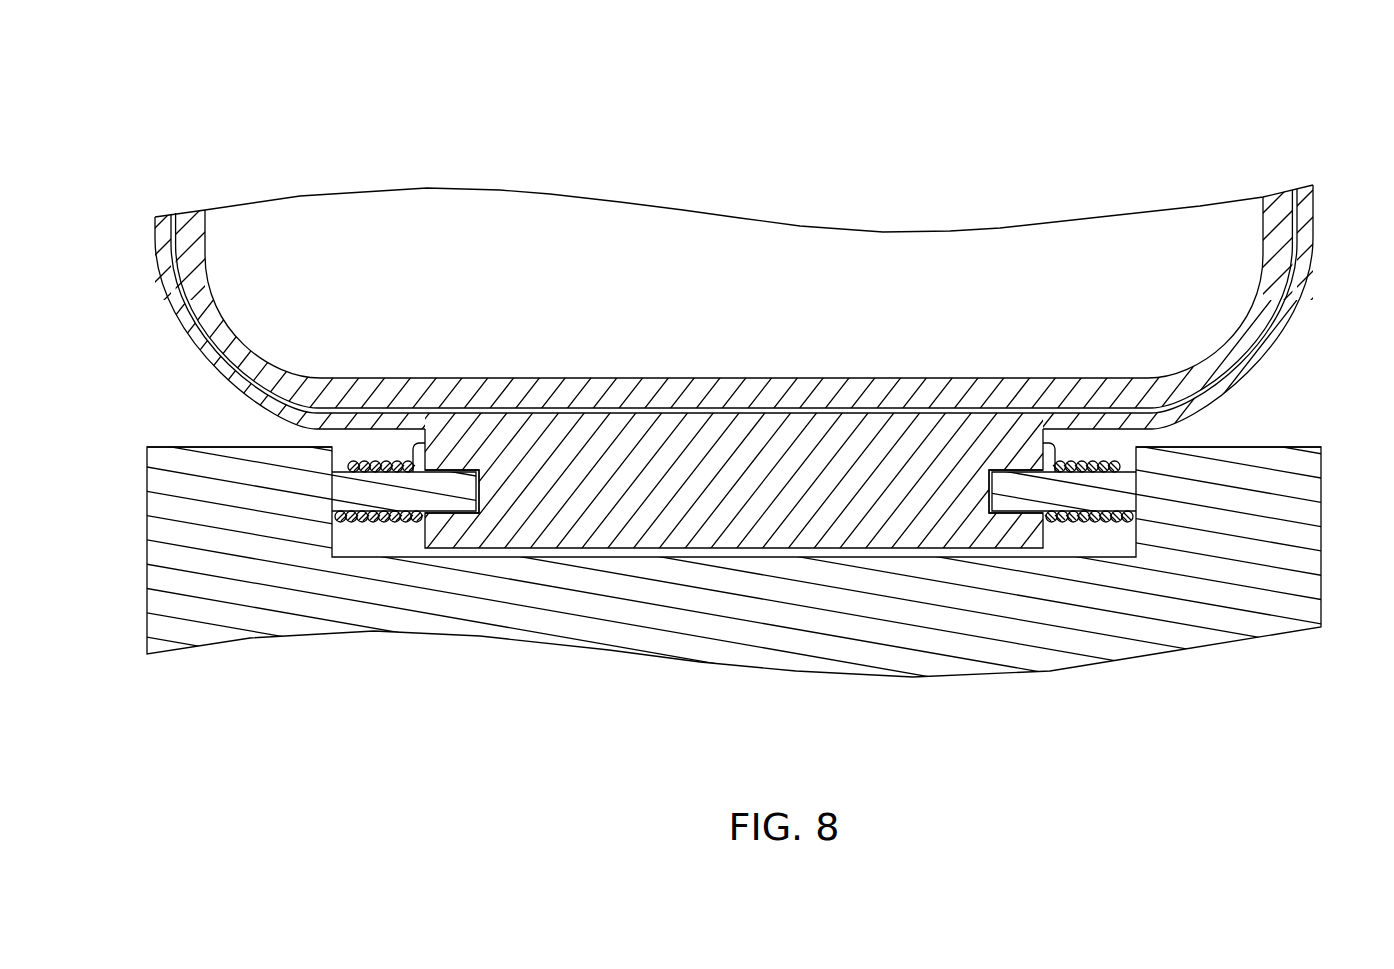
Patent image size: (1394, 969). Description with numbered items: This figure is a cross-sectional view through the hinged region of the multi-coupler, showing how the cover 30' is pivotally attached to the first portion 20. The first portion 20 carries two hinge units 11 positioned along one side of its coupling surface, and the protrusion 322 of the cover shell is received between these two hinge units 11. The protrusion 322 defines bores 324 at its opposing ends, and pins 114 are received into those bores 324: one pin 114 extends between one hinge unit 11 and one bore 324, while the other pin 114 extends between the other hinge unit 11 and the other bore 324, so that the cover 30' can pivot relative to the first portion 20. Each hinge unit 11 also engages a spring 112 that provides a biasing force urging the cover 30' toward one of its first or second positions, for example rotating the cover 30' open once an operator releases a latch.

The cover 30' is at (697, 327).
The first portion 20 is at (427, 676).
The hinge unit 11 is at (218, 468).
The protrusion 322 is at (782, 490).
The bore 324 is at (445, 476).
The pin 114 is at (395, 493).
The spring 112 is at (367, 462).